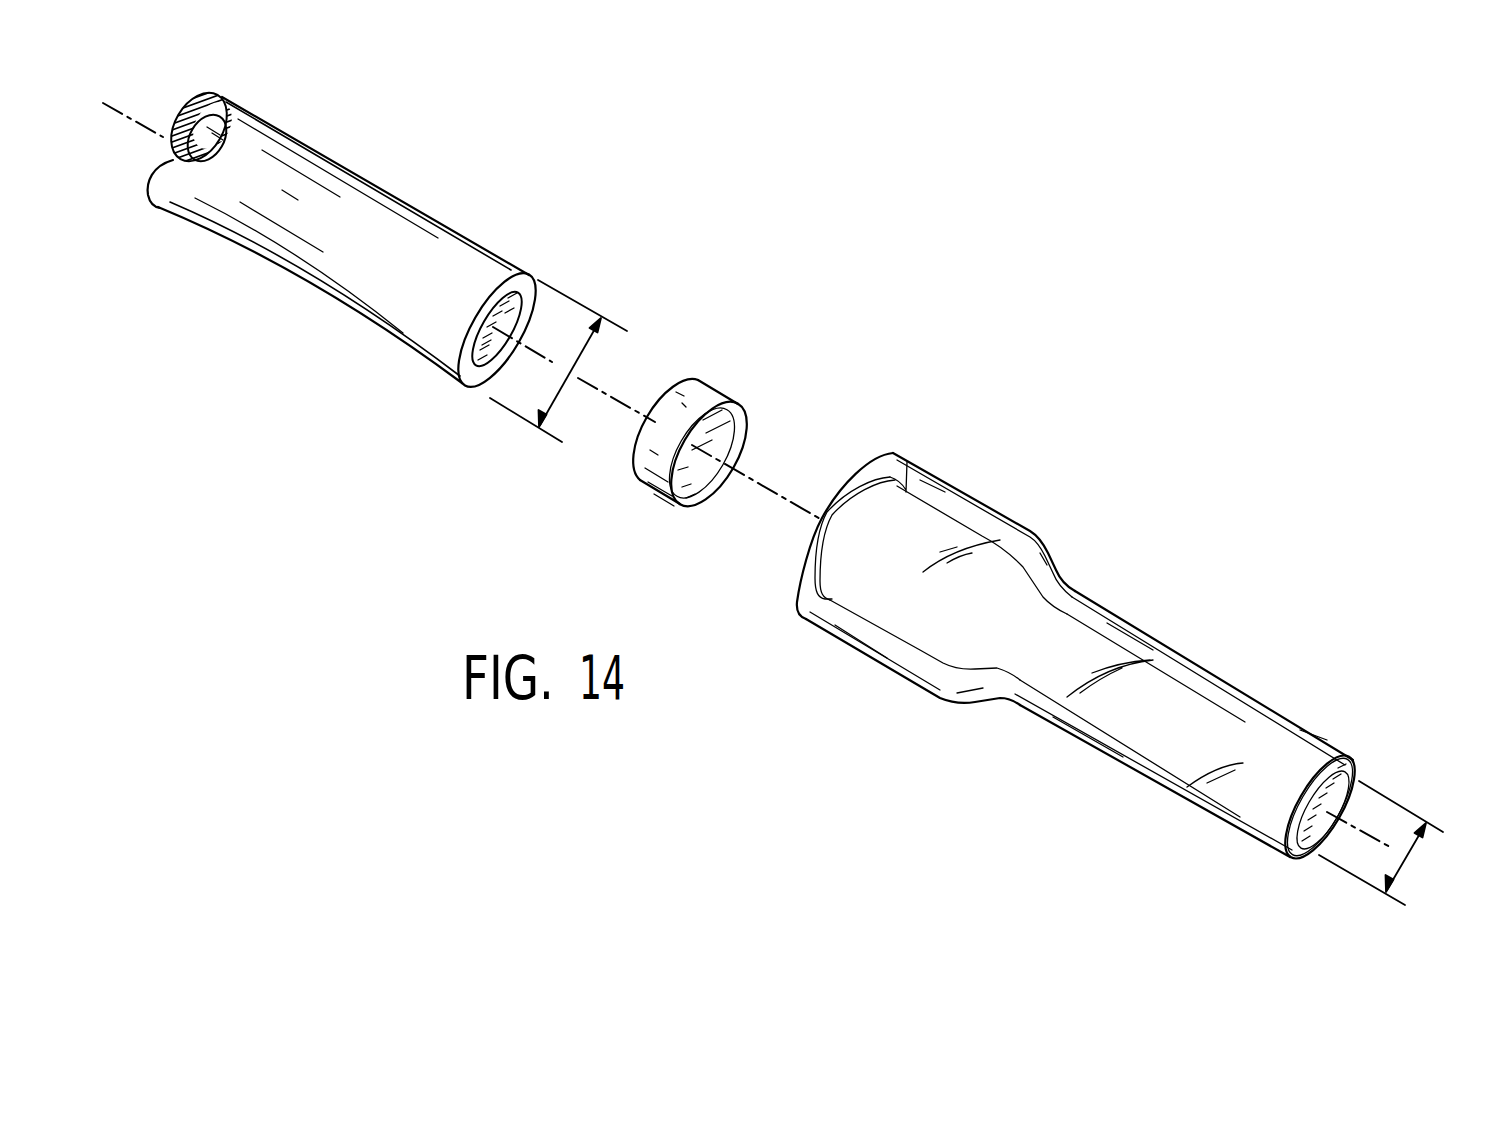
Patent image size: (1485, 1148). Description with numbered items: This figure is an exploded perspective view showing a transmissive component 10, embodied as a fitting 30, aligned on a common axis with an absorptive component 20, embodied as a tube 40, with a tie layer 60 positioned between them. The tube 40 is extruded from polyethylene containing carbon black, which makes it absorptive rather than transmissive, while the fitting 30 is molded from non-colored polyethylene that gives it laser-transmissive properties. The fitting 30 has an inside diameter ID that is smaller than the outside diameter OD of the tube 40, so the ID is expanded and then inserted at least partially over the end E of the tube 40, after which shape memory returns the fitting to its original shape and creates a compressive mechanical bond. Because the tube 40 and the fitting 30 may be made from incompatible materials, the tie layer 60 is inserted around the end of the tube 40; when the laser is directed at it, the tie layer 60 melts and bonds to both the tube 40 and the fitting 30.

The transmissive component 10 is at (1082, 660).
The absorptive component 20 is at (445, 253).
The fitting 30 is at (1222, 693).
The tube 40 is at (349, 227).
The tie layer 60 is at (703, 393).
The outside diameter OD is at (583, 360).
The inside diameter ID is at (1400, 867).
The end E is at (478, 396).